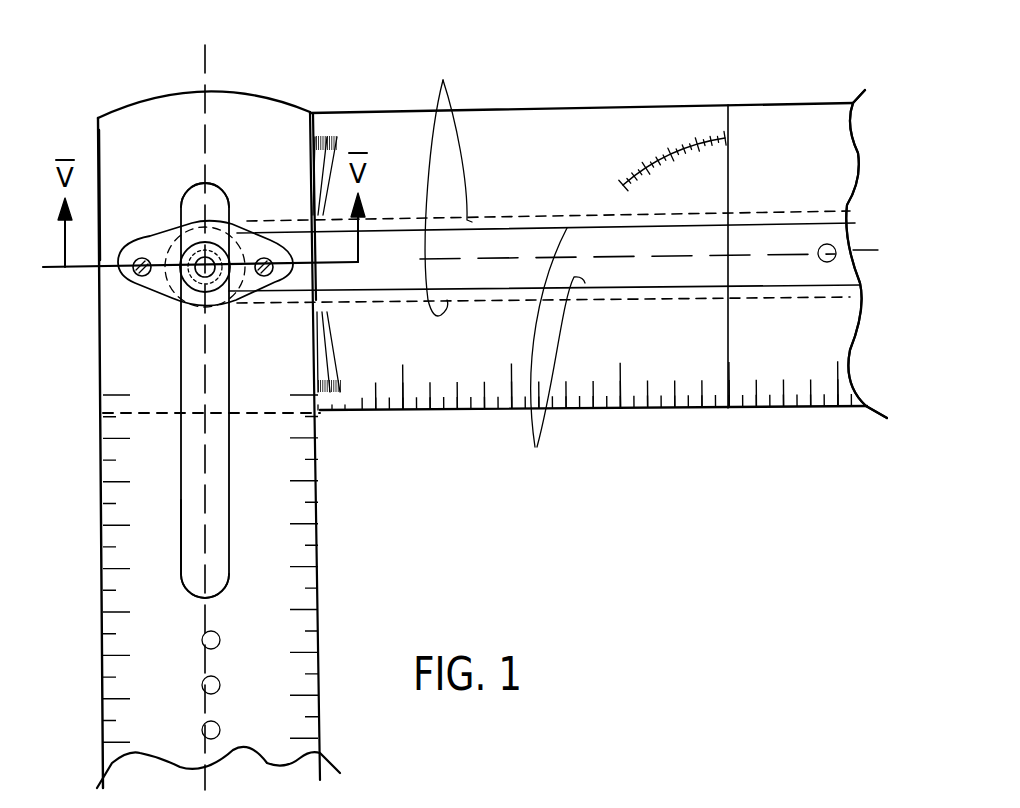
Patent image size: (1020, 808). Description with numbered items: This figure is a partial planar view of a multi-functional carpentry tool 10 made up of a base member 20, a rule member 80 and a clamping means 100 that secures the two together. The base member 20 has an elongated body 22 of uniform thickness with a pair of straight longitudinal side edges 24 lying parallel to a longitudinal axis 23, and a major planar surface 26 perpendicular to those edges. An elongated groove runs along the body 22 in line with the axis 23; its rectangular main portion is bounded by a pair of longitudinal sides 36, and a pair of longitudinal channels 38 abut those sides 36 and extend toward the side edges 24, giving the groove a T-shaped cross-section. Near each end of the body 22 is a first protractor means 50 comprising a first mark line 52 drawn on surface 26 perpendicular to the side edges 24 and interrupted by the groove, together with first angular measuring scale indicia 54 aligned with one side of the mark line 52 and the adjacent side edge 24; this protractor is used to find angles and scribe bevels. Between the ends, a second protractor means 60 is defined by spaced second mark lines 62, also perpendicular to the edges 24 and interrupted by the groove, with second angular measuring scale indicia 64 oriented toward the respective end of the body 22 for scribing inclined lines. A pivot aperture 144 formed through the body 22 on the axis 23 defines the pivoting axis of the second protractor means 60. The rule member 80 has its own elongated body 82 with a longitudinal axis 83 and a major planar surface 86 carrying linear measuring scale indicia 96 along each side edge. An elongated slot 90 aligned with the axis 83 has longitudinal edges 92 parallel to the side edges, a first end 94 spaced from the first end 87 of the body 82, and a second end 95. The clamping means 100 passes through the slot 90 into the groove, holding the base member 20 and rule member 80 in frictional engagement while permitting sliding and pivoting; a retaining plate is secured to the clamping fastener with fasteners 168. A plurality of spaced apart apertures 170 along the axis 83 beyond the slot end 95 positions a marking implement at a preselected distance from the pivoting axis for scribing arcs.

The multi-functional carpentry tool 10 is at (592, 76).
The base member 20 is at (772, 76).
The elongated body 22 is at (535, 138).
The longitudinal axis 23 is at (867, 250).
The longitudinal side edges 24 is at (838, 103).
The major planar surface 26 is at (518, 176).
The longitudinal sides 36 is at (554, 352).
The longitudinal channels 38 is at (448, 186).
The first protractor means 50 is at (299, 92).
The first mark line 52 is at (313, 170).
The first angular measuring scale indicia 54 is at (327, 115).
The second protractor means 60 is at (708, 76).
The second mark line 62 is at (727, 163).
The second angular measuring scale indicia 64 is at (653, 130).
The rule member 80 is at (380, 517).
The elongated body 82 is at (303, 636).
The longitudinal axis 83 is at (200, 45).
The major planar surface 86 is at (142, 157).
The first end 87 is at (142, 100).
The elongated slot 90 is at (181, 358).
The longitudinal edge 92 is at (232, 533).
The first end 94 is at (182, 187).
The second end 95 is at (207, 598).
The linear measuring scale indicia 96 is at (103, 470).
The clamping means 100 is at (76, 130).
The pivot aperture 144 is at (833, 260).
The fasteners 168 is at (112, 295).
The spaced apart apertures 170 is at (202, 640).